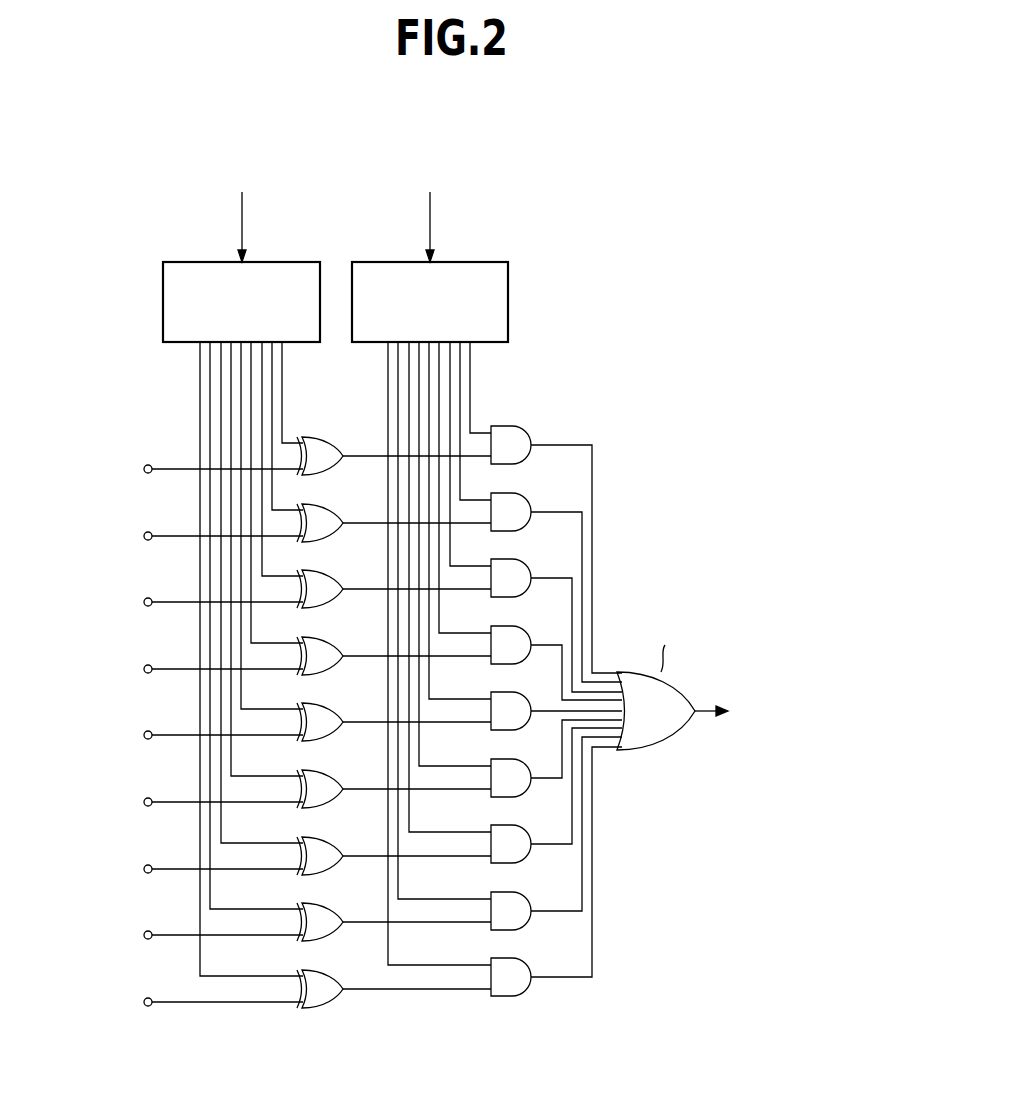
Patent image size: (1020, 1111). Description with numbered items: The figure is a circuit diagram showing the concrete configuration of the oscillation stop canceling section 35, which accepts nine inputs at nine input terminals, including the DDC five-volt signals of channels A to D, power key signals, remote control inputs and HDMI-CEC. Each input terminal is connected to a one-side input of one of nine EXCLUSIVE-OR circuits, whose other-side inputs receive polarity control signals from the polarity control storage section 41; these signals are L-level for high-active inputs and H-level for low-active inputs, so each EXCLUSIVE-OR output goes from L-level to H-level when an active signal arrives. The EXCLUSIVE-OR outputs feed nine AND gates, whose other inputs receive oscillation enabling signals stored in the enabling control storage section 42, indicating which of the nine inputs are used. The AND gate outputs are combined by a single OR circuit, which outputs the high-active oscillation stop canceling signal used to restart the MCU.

The oscillation stop canceling section 35 is at (636, 341).
The polarity control storage section 41 is at (203, 262).
The enabling control storage section 42 is at (471, 262).